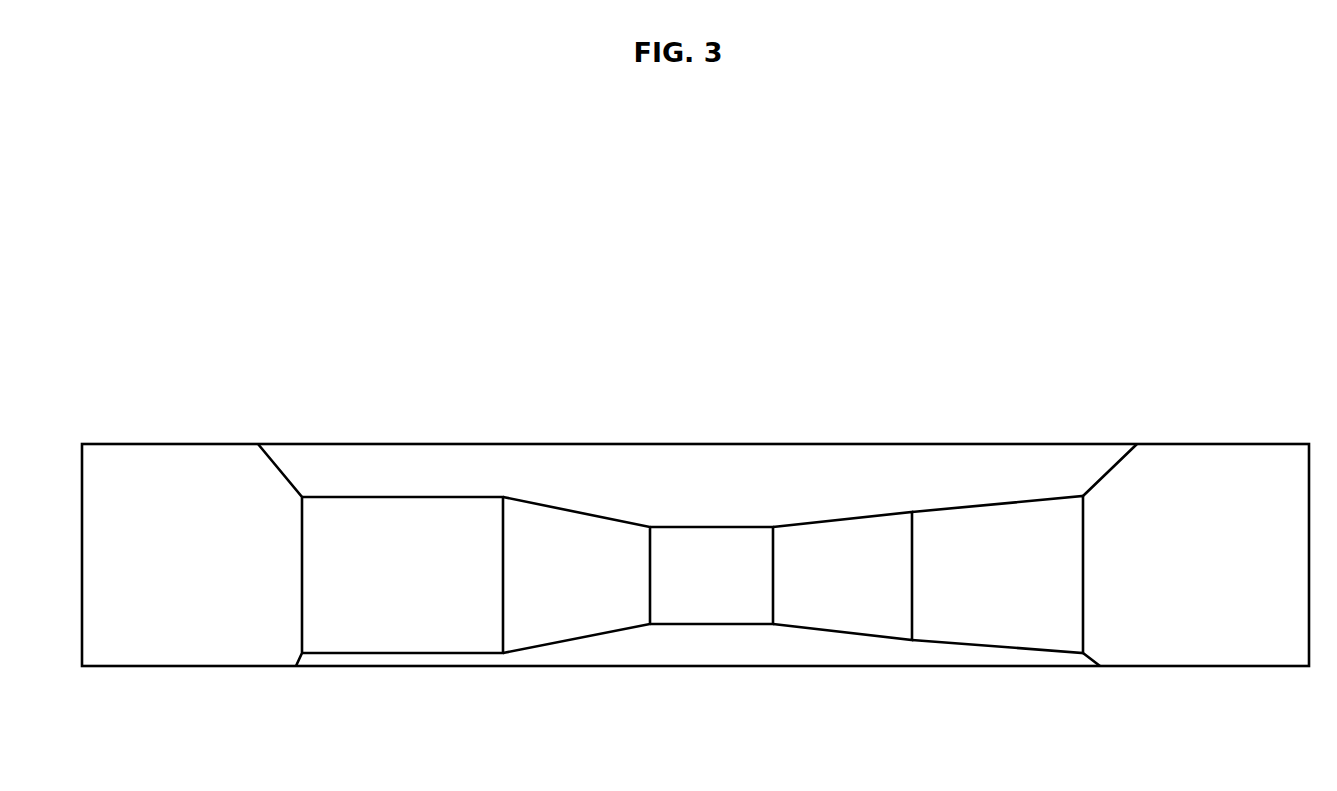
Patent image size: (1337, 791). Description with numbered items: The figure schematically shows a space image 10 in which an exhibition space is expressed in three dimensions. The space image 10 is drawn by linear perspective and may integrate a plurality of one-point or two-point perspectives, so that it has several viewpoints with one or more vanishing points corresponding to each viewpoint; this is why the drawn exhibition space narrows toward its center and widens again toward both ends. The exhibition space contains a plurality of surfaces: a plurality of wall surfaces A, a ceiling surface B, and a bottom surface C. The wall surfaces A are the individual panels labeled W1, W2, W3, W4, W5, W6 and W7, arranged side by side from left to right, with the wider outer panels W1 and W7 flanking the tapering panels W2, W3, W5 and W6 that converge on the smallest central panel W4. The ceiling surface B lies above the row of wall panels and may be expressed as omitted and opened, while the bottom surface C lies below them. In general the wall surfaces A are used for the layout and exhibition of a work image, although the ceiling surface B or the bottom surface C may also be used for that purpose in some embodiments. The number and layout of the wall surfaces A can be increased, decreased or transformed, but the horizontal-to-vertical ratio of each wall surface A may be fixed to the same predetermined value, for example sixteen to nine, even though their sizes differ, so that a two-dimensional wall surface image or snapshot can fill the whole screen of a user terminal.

The space image 10 is at (483, 337).
The wall surfaces A is at (330, 532).
The ceiling surface B is at (733, 490).
The bottom surface C is at (657, 633).
The first width section W1 is at (241, 555).
The second width section W2 is at (402, 575).
The third width section W3 is at (576, 575).
The fourth width section W4 is at (711, 575).
The fifth width section W5 is at (842, 576).
The sixth width section W6 is at (997, 574).
The seventh width section W7 is at (1150, 555).